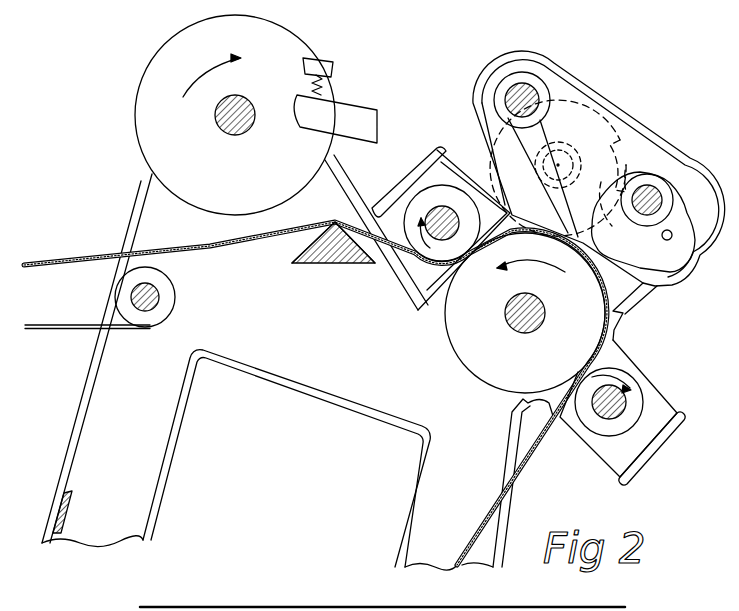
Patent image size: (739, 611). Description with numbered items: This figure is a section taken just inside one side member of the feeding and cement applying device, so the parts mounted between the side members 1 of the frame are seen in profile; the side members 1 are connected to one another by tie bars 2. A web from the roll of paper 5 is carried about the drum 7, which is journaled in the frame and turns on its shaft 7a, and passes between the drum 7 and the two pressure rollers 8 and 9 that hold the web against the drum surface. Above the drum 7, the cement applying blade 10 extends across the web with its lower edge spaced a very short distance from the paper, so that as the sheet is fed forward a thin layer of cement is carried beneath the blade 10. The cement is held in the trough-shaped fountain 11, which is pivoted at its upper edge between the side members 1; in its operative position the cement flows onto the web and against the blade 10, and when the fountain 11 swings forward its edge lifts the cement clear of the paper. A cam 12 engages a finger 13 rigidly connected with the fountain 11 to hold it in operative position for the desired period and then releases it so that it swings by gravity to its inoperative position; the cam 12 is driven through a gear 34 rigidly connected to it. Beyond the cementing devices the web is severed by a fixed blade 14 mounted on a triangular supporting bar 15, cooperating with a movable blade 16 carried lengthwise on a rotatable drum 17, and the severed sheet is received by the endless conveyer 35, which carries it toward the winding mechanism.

The side members 1 is at (145, 452).
The tie bars 2 is at (70, 506).
The roll of paper 5 is at (194, 244).
The drum 7 is at (470, 352).
The shaft of the drum 7a is at (543, 315).
The pressure roller 8 is at (633, 400).
The pressure roller 9 is at (446, 200).
The blade 10 is at (538, 138).
The fountain 11 is at (680, 262).
The cam 12 is at (597, 150).
The finger 13 is at (611, 219).
The fixed blade 14 is at (310, 250).
The triangular supporting bar 15 is at (325, 262).
The movable blade 16 is at (353, 118).
The drum 17 is at (282, 44).
The gear 34 is at (590, 147).
The endless conveyer 35 is at (65, 328).